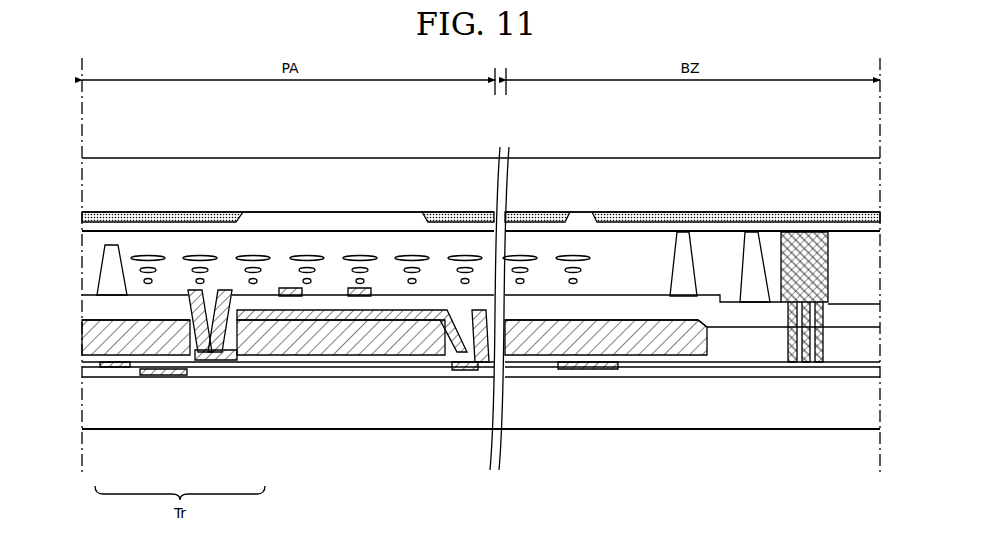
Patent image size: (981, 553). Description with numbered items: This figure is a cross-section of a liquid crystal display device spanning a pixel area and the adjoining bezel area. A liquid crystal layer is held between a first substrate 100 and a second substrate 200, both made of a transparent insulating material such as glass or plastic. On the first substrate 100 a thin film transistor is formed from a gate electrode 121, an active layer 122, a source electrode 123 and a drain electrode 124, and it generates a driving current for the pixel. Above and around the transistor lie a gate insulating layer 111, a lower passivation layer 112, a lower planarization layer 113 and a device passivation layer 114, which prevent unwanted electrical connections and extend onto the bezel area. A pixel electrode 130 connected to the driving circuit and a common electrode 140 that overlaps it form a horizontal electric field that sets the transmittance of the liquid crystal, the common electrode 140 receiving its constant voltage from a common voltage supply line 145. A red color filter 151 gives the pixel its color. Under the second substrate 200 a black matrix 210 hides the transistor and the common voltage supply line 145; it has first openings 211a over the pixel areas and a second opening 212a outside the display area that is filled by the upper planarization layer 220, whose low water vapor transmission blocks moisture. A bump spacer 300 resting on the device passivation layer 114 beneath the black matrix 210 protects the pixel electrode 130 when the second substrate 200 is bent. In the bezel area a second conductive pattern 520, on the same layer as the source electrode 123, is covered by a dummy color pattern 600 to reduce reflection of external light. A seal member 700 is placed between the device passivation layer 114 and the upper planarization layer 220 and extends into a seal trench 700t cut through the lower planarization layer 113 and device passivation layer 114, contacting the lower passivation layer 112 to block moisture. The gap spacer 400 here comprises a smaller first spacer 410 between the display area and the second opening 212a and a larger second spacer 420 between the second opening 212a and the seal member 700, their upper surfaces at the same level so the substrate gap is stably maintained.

The first substrate 100 is at (880, 399).
The gate insulating layer 111 is at (82, 377).
The lower passivation layer 112 is at (880, 368).
The lower planarization layer 113 is at (82, 321).
The device passivation layer 114 is at (880, 322).
The gate electrode 121 is at (158, 378).
The active layer 122 is at (207, 378).
The source electrode 123 is at (117, 378).
The drain electrode 124 is at (235, 362).
The pixel electrode 130 is at (292, 297).
The common electrode 140 is at (375, 318).
The common voltage supply line 145 is at (468, 370).
The red color filter 151 is at (413, 350).
The second substrate 200 is at (880, 185).
The black matrix 210 is at (82, 218).
The first openings 211a is at (335, 212).
The second opening 212a is at (582, 212).
The upper planarization layer 220 is at (880, 231).
The bump spacer 300 is at (105, 268).
The gap spacer 400 is at (730, 377).
The first spacer 410 is at (683, 300).
The second spacer 420 is at (752, 290).
The second conductive pattern 520 is at (590, 372).
The dummy color pattern 600 is at (555, 345).
The seal member 700 is at (828, 270).
The seal trench 700t is at (824, 346).